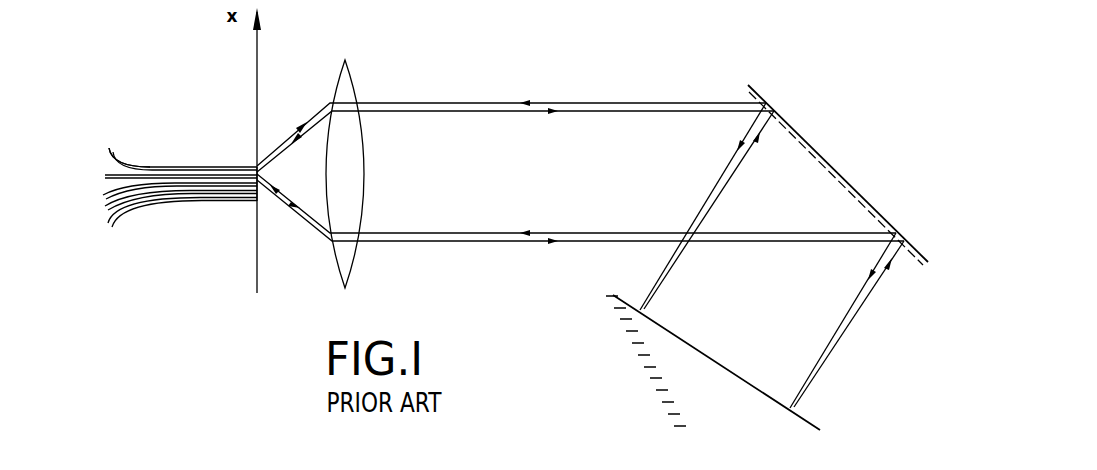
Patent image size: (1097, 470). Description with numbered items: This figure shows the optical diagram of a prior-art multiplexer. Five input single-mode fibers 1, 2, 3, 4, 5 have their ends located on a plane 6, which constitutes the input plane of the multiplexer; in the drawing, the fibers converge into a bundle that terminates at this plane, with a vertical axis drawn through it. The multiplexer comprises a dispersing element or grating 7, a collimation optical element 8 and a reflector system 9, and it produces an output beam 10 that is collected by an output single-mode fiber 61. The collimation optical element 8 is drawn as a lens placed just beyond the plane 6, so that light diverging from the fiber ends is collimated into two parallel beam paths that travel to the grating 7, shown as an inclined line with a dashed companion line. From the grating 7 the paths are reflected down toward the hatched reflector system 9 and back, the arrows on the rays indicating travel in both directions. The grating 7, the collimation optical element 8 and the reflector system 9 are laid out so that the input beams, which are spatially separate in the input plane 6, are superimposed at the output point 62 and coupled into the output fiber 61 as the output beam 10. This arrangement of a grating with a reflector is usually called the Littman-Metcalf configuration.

The input single-mode fiber 1 is at (106, 150).
The input single-mode fiber 2 is at (105, 178).
The input single-mode fiber 3 is at (103, 196).
The input single-mode fiber 4 is at (105, 206).
The input single-mode fiber 5 is at (108, 223).
The plane 6 is at (258, 58).
The output single-mode fiber 61 is at (107, 147).
The output point 62 is at (258, 165).
The grating 7 is at (834, 173).
The collimation optical element 8 is at (343, 88).
The reflector system 9 is at (747, 390).
The output beam 10 is at (472, 102).